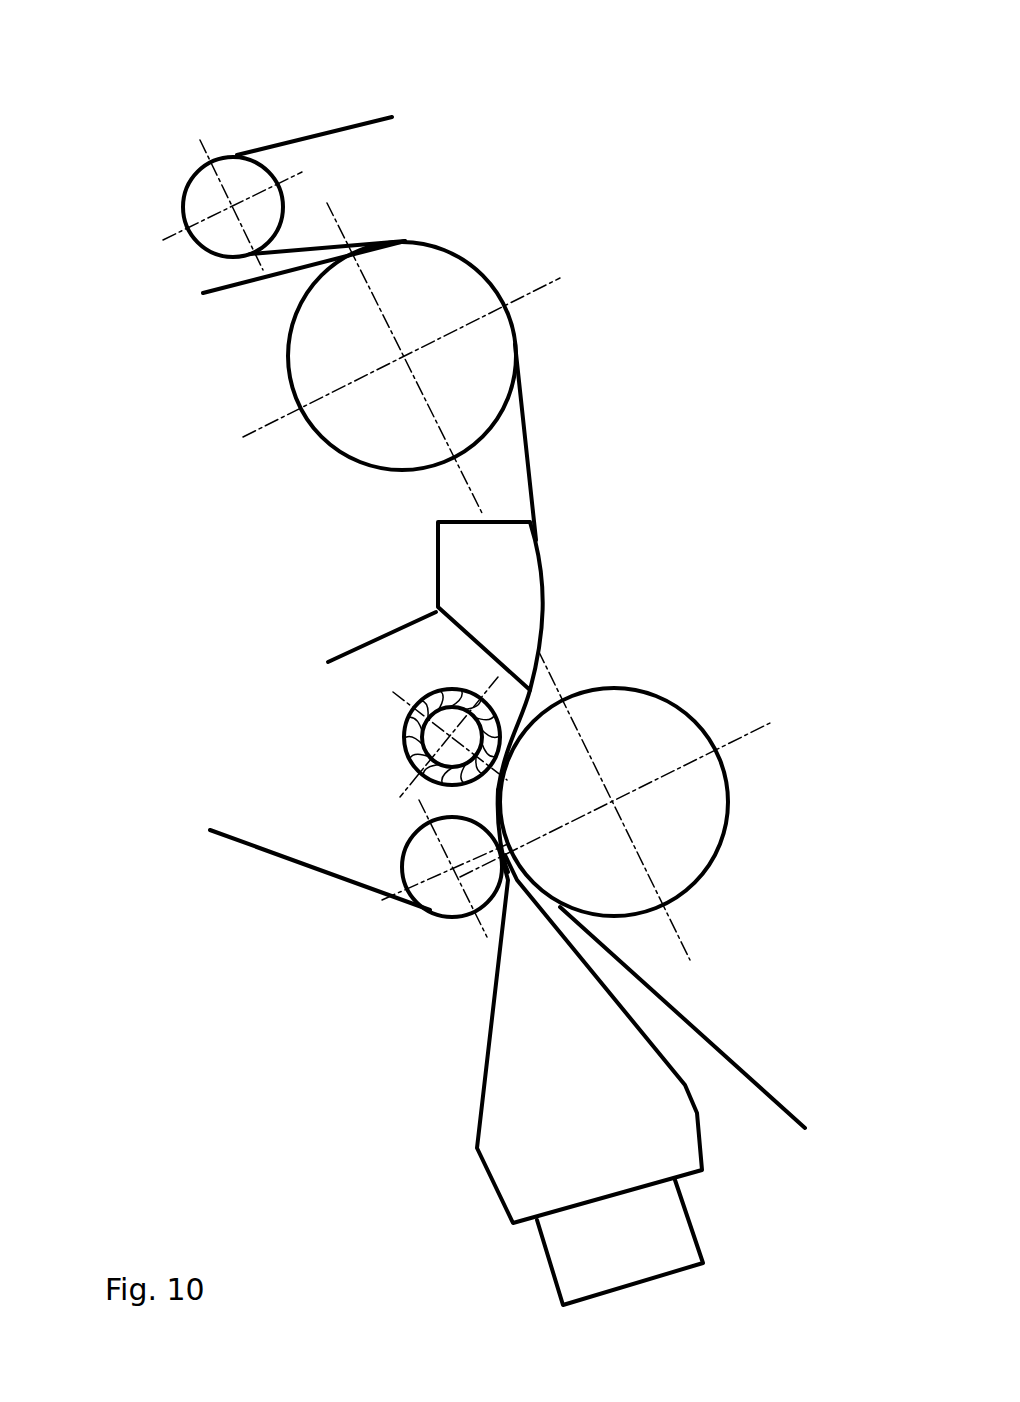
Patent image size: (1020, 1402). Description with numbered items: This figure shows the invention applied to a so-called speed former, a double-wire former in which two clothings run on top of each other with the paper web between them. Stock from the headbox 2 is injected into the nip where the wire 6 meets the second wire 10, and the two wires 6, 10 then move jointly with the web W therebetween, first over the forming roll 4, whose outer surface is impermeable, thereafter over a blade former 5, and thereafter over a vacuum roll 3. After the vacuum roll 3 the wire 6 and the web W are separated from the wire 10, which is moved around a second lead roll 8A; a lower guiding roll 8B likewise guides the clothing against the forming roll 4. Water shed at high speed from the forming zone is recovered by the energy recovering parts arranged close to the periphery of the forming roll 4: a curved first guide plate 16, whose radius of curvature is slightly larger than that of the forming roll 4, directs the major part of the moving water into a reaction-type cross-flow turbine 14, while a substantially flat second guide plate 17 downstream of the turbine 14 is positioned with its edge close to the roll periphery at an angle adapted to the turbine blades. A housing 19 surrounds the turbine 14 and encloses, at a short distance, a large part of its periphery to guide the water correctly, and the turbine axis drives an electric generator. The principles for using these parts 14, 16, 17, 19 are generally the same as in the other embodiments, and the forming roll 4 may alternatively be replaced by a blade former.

The headbox 2 is at (453, 1100).
The vacuum roll 3 is at (472, 363).
The forming roll 4 is at (683, 813).
The blade former 5 is at (498, 587).
The wire 6 is at (288, 862).
The second lead roll 8A is at (240, 180).
The lower guiding roll 8B is at (442, 900).
The wire 10 is at (373, 113).
The turbine 14 is at (407, 707).
The guide plate 16 is at (490, 798).
The second guide plate 17 is at (512, 740).
The housing 19 is at (353, 648).
The web w is at (226, 278).